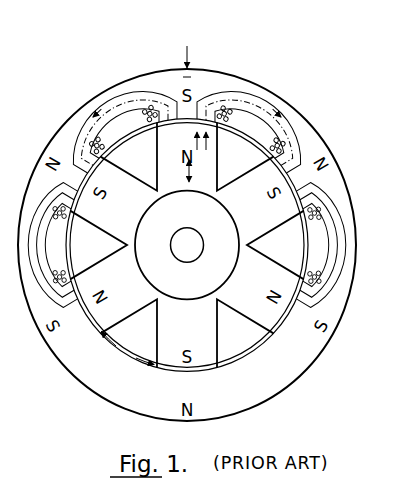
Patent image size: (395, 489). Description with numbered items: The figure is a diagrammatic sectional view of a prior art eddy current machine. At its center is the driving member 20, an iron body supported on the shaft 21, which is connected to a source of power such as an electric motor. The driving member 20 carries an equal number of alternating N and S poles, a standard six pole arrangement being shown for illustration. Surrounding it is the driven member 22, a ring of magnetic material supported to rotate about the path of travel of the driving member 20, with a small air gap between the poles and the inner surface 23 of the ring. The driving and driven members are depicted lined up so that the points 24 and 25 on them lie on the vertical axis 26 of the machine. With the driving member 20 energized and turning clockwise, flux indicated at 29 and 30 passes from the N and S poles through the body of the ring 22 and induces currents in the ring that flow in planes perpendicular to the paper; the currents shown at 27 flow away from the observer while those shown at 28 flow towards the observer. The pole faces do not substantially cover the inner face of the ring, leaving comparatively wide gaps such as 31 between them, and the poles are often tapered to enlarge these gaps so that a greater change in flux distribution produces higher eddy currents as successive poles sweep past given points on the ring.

The driving member 20 is at (187, 245).
The shaft 21 is at (187, 245).
The driven member 22 is at (314, 152).
The inner surface 23 is at (301, 227).
The point 24 is at (193, 169).
The point 25 is at (194, 86).
The vertical axis 26 is at (187, 53).
The currents 27 is at (270, 145).
The currents 28 is at (146, 121).
The flux 29 is at (106, 101).
The flux 30 is at (268, 105).
The gap 31 is at (127, 347).